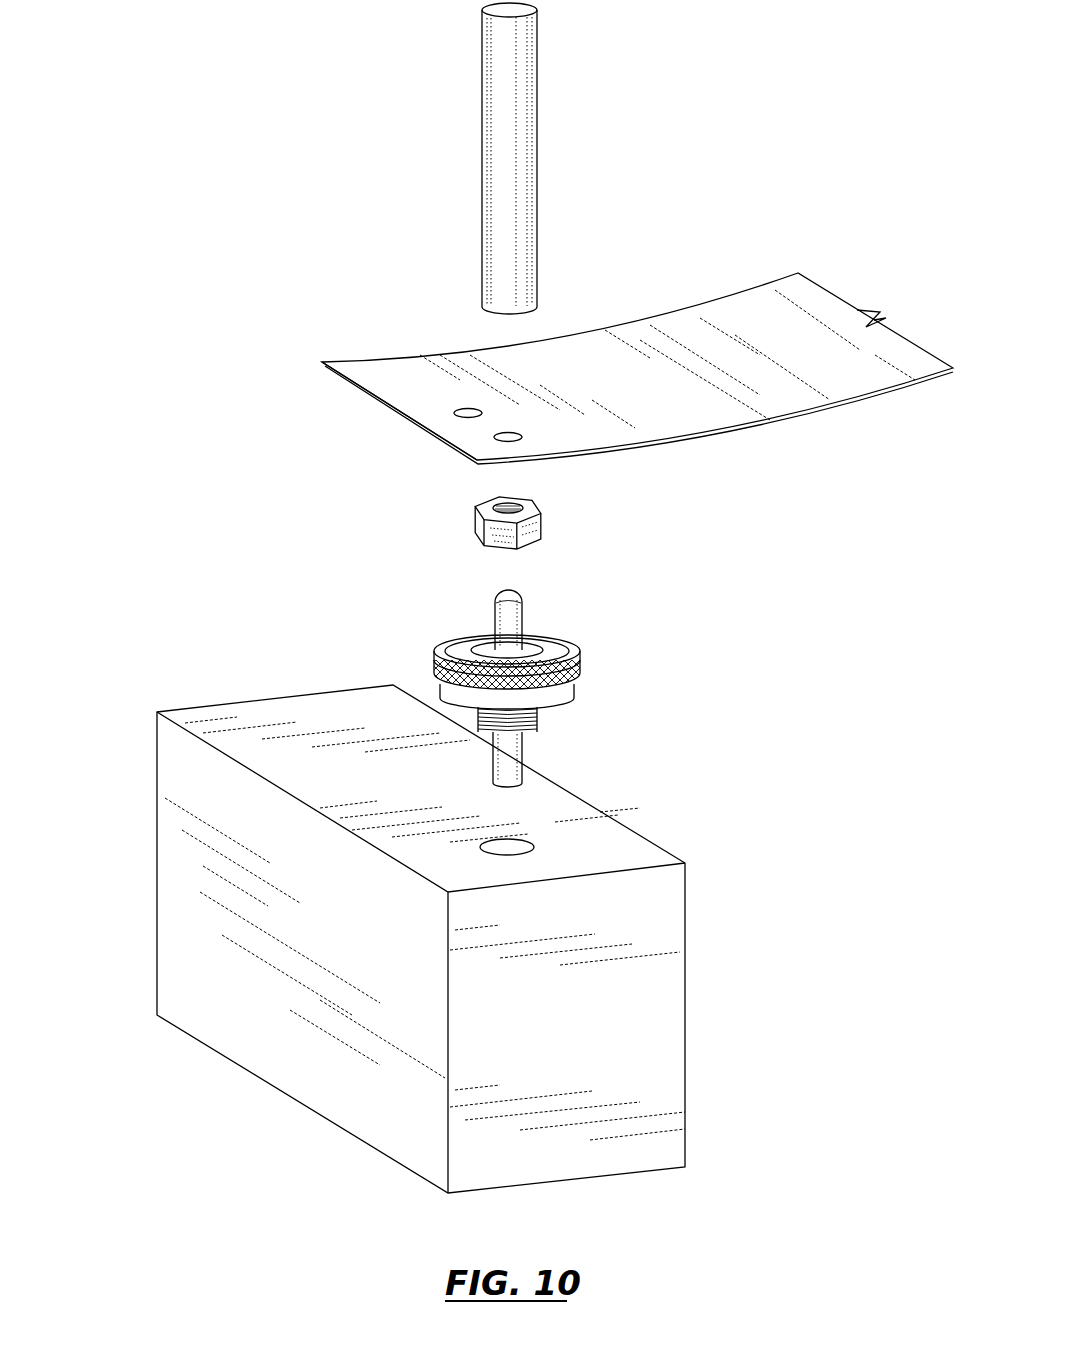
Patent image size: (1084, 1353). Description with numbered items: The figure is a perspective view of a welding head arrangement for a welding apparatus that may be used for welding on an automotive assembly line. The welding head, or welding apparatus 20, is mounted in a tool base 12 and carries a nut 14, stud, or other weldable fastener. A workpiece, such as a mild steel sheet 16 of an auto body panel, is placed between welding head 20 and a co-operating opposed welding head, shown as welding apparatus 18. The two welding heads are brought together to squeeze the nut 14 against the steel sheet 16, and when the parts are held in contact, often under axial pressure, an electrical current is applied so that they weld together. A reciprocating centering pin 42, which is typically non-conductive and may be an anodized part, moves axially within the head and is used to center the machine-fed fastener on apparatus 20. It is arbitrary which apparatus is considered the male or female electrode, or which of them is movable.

The tool base 12 is at (177, 768).
The nut 14 is at (476, 521).
The mild steel sheet 16 is at (361, 368).
The welding apparatus 18 is at (508, 58).
The welding apparatus 20 is at (613, 650).
The reciprocating centering pin 42 is at (508, 755).